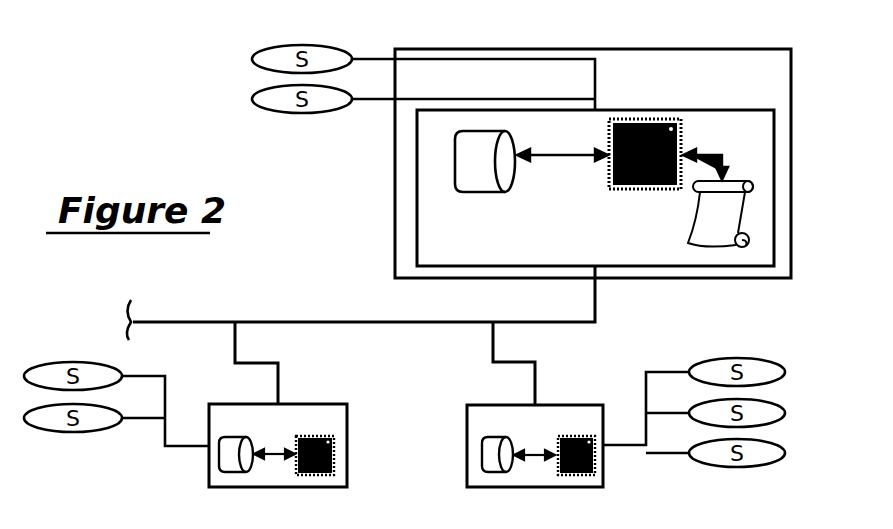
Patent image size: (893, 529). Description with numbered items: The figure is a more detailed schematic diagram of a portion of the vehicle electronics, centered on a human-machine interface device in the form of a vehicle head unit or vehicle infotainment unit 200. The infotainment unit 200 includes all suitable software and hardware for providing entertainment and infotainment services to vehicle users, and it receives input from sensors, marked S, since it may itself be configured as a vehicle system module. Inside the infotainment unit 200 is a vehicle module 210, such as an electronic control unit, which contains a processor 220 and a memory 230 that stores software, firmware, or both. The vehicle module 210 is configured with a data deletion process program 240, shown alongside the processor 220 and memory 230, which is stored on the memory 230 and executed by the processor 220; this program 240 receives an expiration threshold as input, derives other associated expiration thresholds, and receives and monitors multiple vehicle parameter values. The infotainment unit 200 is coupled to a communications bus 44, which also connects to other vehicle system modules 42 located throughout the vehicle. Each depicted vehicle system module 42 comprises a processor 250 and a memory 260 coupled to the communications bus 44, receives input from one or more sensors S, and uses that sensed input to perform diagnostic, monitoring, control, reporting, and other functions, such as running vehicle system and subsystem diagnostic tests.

The vehicle infotainment unit 200 is at (677, 48).
The vehicle module 210 is at (677, 110).
The processor 220 is at (653, 192).
The memory 230 is at (485, 193).
The data deletion process program 240 is at (750, 183).
The communications bus 44 is at (320, 322).
The vehicle system module 42 is at (343, 406).
The processor 250 is at (230, 436).
The memory 260 is at (333, 437).